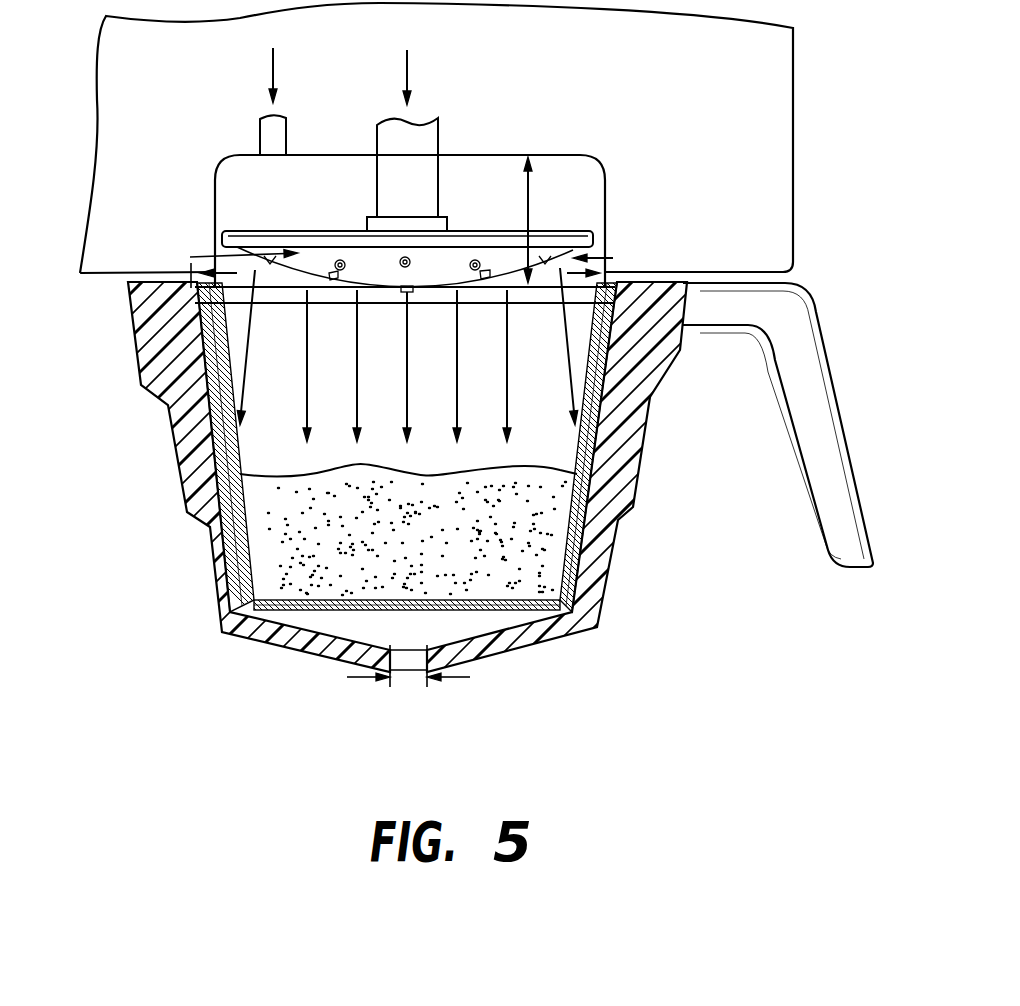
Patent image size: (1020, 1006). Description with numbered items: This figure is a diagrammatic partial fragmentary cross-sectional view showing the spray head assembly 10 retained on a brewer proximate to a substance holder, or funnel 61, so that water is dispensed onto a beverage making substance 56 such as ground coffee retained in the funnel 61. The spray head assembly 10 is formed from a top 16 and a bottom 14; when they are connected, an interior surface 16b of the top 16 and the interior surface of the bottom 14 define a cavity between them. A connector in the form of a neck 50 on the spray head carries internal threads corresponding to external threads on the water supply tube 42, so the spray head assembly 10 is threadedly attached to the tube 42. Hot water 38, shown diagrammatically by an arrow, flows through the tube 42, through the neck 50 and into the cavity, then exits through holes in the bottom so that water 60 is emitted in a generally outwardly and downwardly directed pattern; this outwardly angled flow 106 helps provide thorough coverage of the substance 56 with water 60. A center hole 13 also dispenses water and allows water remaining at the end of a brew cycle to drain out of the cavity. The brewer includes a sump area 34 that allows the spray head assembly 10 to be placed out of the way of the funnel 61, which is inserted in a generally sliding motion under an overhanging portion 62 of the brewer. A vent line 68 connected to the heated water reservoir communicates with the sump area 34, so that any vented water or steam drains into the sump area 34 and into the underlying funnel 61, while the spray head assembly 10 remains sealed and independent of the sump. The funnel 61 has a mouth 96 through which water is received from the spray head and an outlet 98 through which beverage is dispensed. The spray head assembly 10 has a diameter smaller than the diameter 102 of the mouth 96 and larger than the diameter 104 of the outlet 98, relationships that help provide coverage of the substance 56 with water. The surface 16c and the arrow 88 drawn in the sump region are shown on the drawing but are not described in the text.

The spray head assembly 10 is at (613, 258).
The center hole 13 is at (405, 300).
The bottom 14 is at (483, 216).
The top 16 is at (237, 273).
The interior surface 16b is at (310, 248).
The spray plate 16c is at (243, 230).
The sump area 34 is at (568, 177).
The hot water 38 is at (405, 63).
The water supply tube 42 is at (427, 147).
The neck 50 is at (367, 223).
The beverage making substance 56 is at (543, 567).
The water 60 is at (230, 332).
The funnel 61 is at (630, 528).
The overhanging portion 62 is at (757, 272).
The vent line 68 is at (260, 133).
The vapor flow 88 is at (530, 190).
The mouth 96 is at (213, 288).
The outlet 98 is at (410, 680).
The diameter 102 is at (600, 258).
The diameter 104 is at (398, 685).
The outwardly angled flow 106 is at (562, 330).